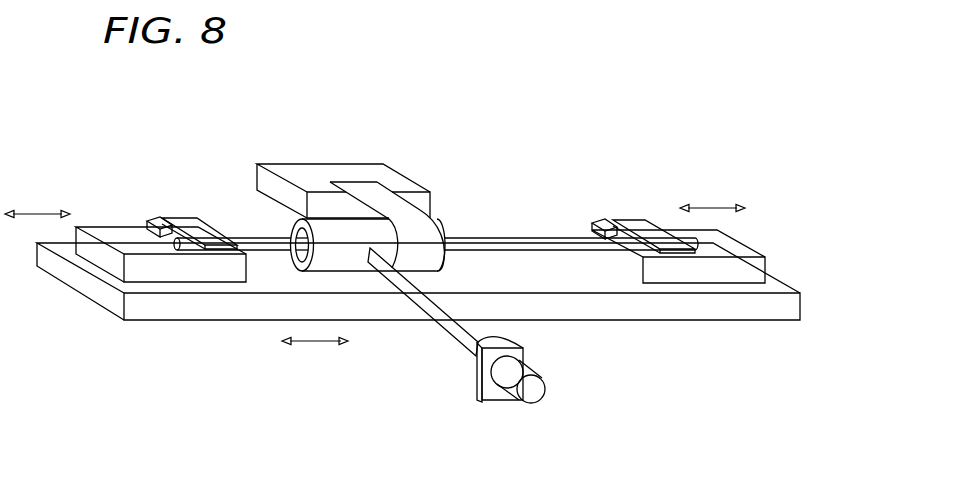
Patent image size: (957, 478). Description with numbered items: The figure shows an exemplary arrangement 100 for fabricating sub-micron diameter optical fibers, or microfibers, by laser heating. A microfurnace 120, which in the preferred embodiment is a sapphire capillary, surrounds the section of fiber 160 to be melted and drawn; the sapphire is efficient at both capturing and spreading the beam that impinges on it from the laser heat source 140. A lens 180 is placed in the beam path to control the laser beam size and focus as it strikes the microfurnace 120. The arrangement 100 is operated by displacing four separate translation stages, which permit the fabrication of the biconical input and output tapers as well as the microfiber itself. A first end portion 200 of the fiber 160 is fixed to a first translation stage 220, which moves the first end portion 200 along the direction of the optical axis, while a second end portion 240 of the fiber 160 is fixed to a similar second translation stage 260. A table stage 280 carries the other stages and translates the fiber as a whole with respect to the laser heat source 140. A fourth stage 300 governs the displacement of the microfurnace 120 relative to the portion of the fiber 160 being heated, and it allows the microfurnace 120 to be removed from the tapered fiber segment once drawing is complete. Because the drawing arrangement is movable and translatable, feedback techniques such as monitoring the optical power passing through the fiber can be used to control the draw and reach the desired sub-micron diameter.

The arrangement 100 is at (182, 81).
The microfurnace 120 is at (442, 226).
The laser heat source 140 is at (523, 368).
The fiber 160 is at (534, 240).
The lens 180 is at (476, 372).
The first end portion 200 is at (158, 221).
The first translation stage 220 is at (108, 233).
The second end portion 240 is at (651, 223).
The second translation stage 260 is at (734, 251).
The table stage 280 is at (250, 311).
The fourth stage 300 is at (328, 162).